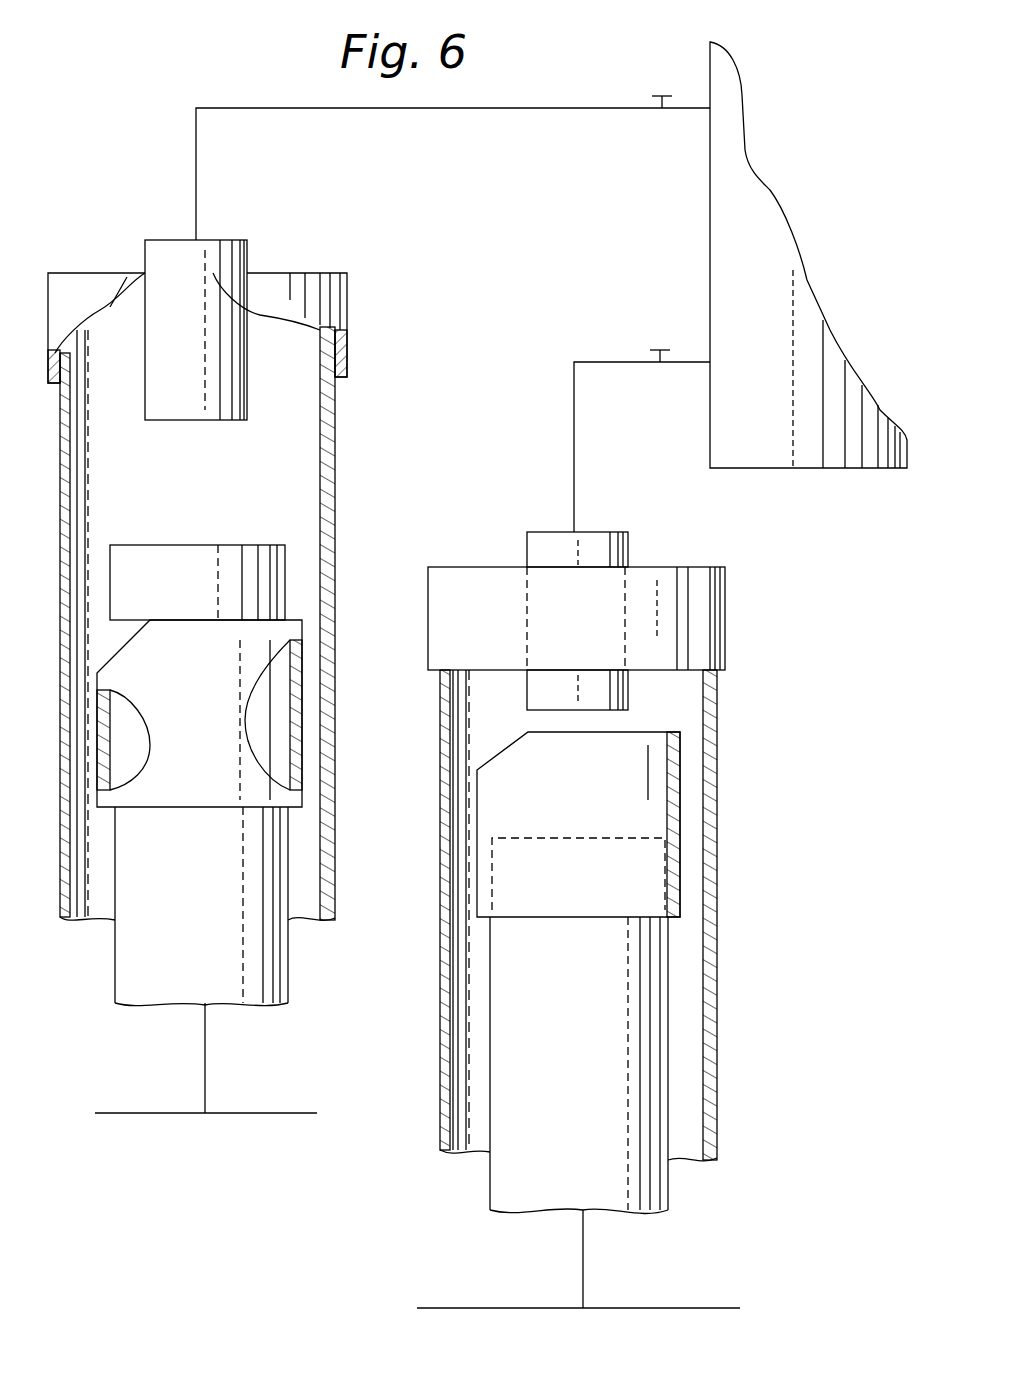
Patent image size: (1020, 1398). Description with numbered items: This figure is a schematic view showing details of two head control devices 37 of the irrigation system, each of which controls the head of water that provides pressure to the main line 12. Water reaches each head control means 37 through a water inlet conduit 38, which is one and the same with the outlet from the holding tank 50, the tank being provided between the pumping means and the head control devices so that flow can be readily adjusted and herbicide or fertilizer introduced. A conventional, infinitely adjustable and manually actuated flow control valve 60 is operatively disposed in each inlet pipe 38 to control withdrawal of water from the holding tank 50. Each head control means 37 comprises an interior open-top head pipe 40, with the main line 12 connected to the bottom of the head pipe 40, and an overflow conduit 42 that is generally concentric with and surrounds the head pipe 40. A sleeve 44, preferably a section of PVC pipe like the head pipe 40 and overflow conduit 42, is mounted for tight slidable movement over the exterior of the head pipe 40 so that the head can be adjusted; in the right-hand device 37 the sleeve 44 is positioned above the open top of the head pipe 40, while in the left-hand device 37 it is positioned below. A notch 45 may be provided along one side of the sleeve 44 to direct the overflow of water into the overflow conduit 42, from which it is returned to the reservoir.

The main line 12 is at (247, 1113).
The head control means 37 is at (437, 228).
The water inlet conduit 38 is at (196, 188).
The head pipe 40 is at (288, 957).
The overflow conduit 42 is at (335, 463).
The sleeve 44 is at (288, 640).
The notch 45 is at (520, 722).
The holding tank 50 is at (767, 470).
The flow control valve 60 is at (670, 74).